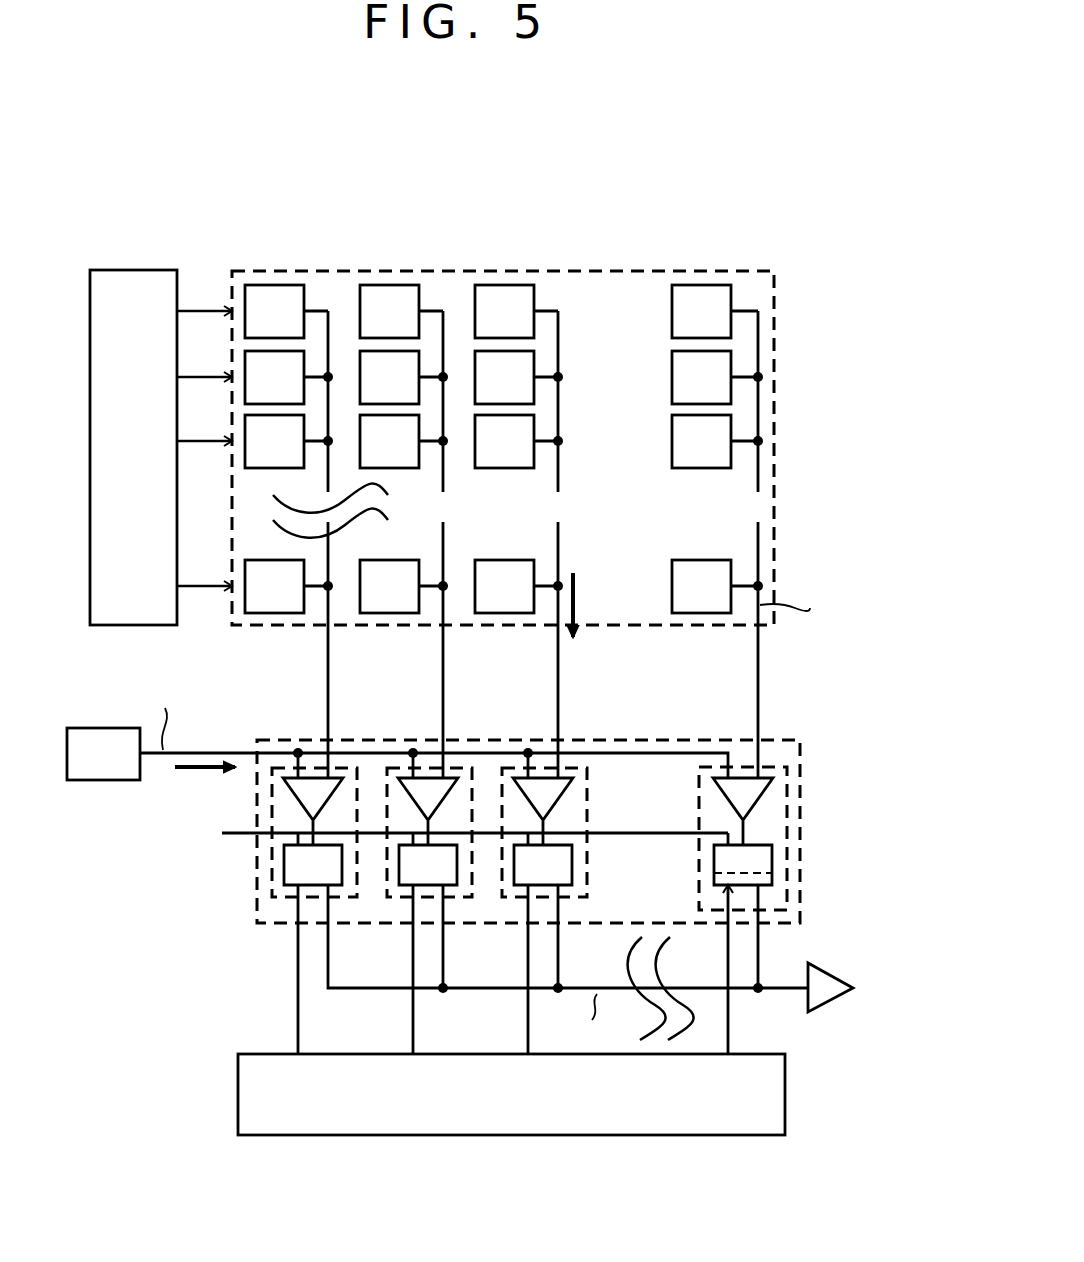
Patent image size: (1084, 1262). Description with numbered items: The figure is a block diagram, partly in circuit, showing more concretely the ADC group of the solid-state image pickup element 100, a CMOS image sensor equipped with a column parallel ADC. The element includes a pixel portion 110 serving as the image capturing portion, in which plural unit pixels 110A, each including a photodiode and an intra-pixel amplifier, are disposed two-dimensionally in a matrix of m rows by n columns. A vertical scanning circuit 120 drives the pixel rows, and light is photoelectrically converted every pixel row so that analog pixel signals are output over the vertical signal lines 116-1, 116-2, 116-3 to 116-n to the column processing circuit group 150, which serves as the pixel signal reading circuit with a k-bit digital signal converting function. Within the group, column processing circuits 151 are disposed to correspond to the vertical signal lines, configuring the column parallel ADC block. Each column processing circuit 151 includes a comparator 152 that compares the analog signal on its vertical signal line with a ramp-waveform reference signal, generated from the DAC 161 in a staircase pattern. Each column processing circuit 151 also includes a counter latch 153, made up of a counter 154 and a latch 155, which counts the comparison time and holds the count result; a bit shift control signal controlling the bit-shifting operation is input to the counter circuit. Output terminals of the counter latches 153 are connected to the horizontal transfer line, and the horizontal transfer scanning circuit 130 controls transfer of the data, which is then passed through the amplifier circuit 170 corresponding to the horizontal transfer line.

The solid-state image pickup element 100 is at (500, 187).
The pixel portion 110 is at (560, 498).
The unit pixel 110A is at (731, 293).
The vertical signal line 116-1 is at (330, 541).
The vertical signal line 116-2 is at (445, 541).
The vertical signal line 116-3 is at (600, 542).
The vertical signal line 116-n is at (760, 540).
The vertical scanning circuit 120 is at (137, 270).
The horizontal transfer scanning circuit 130 is at (785, 1090).
The column processing circuit group 150 is at (528, 897).
The column processing circuit 151 is at (759, 838).
The comparator 152 is at (760, 796).
The counter latch 153 is at (754, 866).
The counter 154 is at (713, 855).
The latch 155 is at (713, 880).
The DAC 161 is at (105, 787).
The amplifier circuit 170 is at (832, 972).